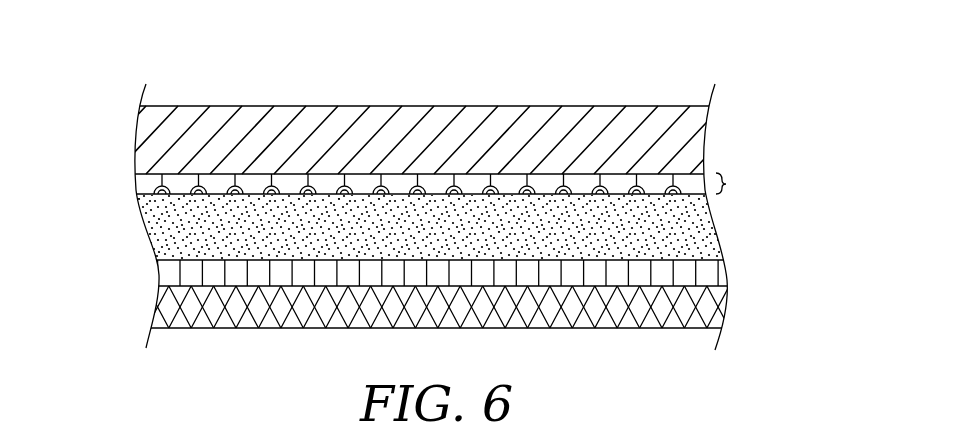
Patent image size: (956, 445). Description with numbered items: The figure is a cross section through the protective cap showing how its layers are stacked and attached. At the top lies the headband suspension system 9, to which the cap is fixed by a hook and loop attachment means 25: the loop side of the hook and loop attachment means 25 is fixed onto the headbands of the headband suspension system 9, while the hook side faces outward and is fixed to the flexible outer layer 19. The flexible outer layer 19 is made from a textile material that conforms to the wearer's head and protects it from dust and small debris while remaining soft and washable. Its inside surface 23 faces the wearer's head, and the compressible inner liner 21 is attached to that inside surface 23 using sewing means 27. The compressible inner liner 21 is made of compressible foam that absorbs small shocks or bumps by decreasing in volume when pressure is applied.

The headband suspension system 9 is at (680, 131).
The hook and loop attachment means 25 is at (726, 184).
The inside surface 23 is at (705, 258).
The sewing means 27 is at (172, 271).
The compressible inner liner 21 is at (710, 304).
The flexible outer layer 19 is at (167, 230).